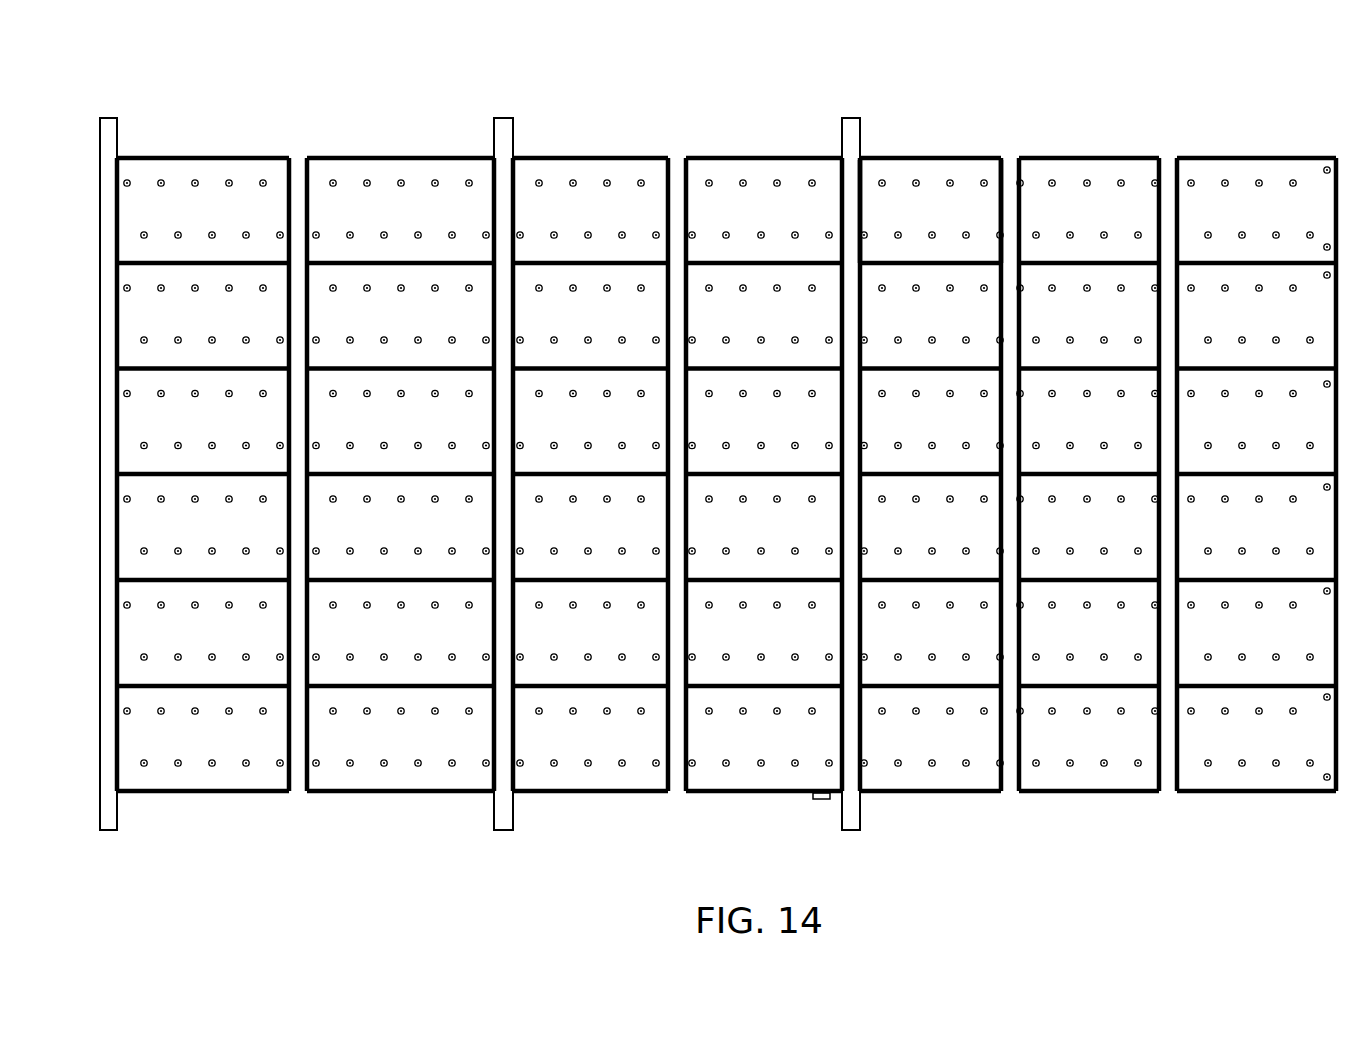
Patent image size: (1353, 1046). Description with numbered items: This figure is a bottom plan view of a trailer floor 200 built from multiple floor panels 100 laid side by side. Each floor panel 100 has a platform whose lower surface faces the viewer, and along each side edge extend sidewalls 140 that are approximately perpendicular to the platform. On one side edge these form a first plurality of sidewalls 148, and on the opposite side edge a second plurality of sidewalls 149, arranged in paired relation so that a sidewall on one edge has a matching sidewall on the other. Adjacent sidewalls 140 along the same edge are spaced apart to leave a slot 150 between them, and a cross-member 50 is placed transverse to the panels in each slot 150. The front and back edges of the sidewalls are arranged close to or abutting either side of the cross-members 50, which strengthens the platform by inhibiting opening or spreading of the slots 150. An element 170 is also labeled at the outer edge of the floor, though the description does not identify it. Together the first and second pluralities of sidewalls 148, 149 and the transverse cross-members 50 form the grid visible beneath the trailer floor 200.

The trailer floor 200 is at (392, 114).
The first plurality of sidewalls 148 is at (392, 503).
The second plurality of sidewalls 149 is at (1011, 478).
The slot 150 is at (627, 438).
The sidewall 140 is at (944, 178).
The end frame member 170 is at (1284, 447).
The cross-member 50 is at (583, 506).
The floor panel 100 is at (1074, 834).